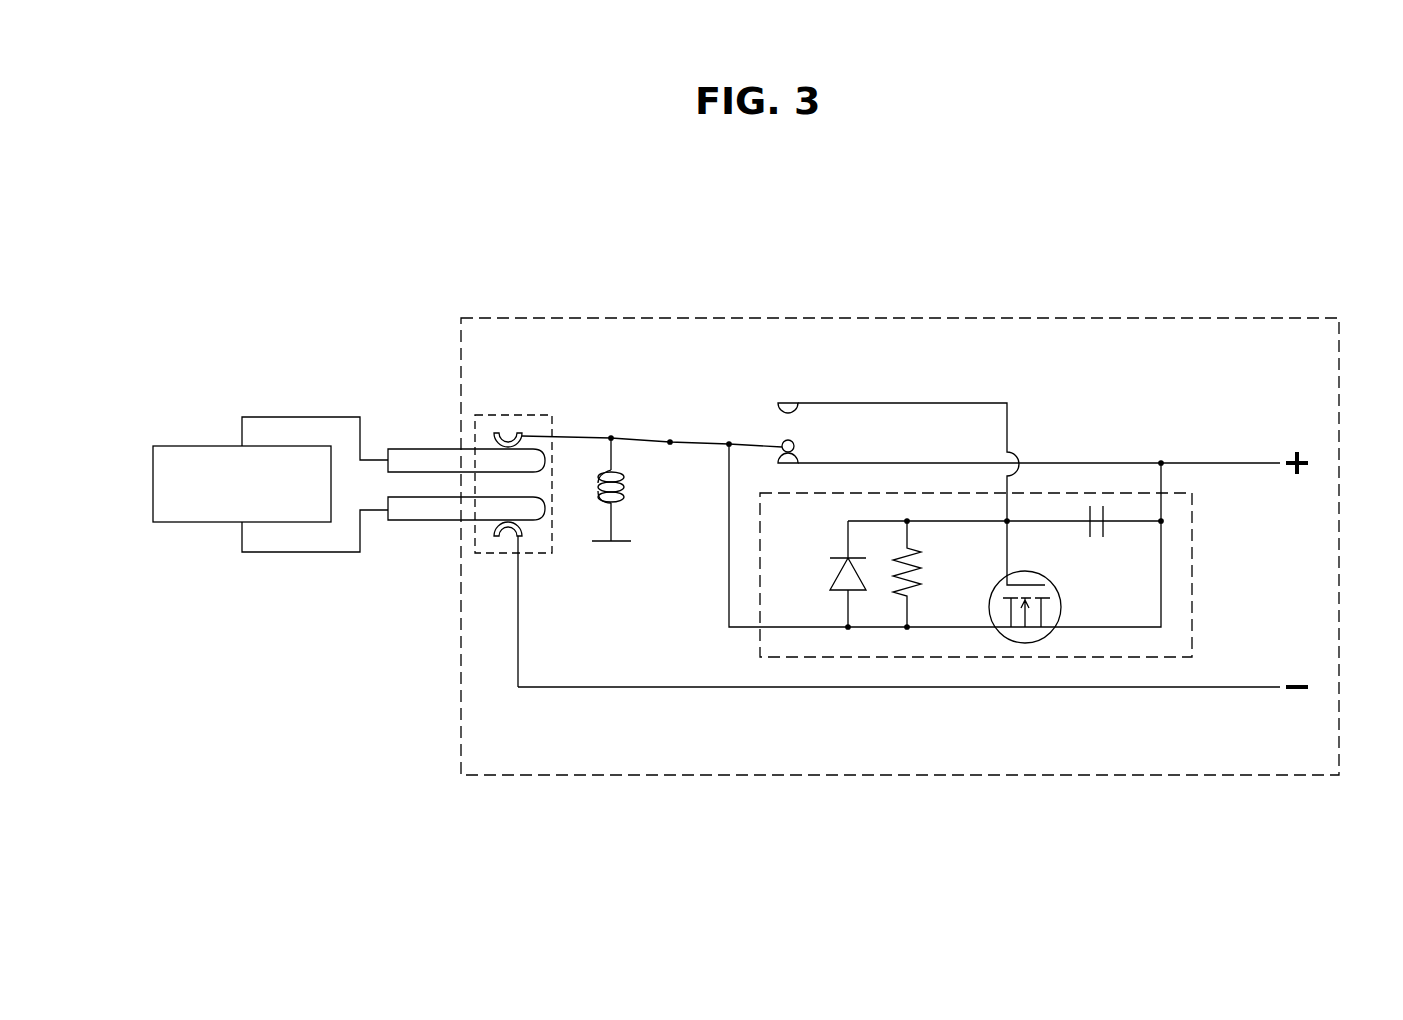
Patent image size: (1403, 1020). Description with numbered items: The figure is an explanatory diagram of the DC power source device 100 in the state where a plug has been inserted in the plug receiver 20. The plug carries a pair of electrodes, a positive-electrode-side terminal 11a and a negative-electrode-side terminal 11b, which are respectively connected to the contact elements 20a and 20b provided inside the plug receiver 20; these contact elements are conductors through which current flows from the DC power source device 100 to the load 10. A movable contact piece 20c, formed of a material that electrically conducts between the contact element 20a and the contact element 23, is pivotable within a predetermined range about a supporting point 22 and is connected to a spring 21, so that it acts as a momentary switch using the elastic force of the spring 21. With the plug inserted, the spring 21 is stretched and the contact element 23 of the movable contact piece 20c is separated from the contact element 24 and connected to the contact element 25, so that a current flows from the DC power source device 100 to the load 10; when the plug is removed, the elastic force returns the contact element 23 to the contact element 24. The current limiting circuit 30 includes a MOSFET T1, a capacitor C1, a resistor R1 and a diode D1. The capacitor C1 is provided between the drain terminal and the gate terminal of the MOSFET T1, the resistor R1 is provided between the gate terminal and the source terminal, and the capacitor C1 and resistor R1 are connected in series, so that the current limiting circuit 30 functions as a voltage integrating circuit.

The DC power source device 100 is at (1062, 317).
The load 10 is at (193, 446).
The positive-electrode-side terminal 11a is at (400, 449).
The negative-electrode-side terminal 11b is at (398, 521).
The plug receiver 20 is at (488, 414).
The contact element 20a is at (512, 428).
The contact element 20b is at (513, 542).
The movable contact piece 20c is at (705, 442).
The spring 21 is at (626, 483).
The supporting point 22 is at (671, 440).
The contact element 23 is at (795, 444).
The contact element 24 is at (783, 401).
The contact element 25 is at (800, 456).
The current limiting circuit 30 is at (998, 550).
The diode D1 is at (830, 574).
The resistor R1 is at (930, 574).
The capacitor C1 is at (1097, 537).
The MOSFET T1 is at (1062, 600).